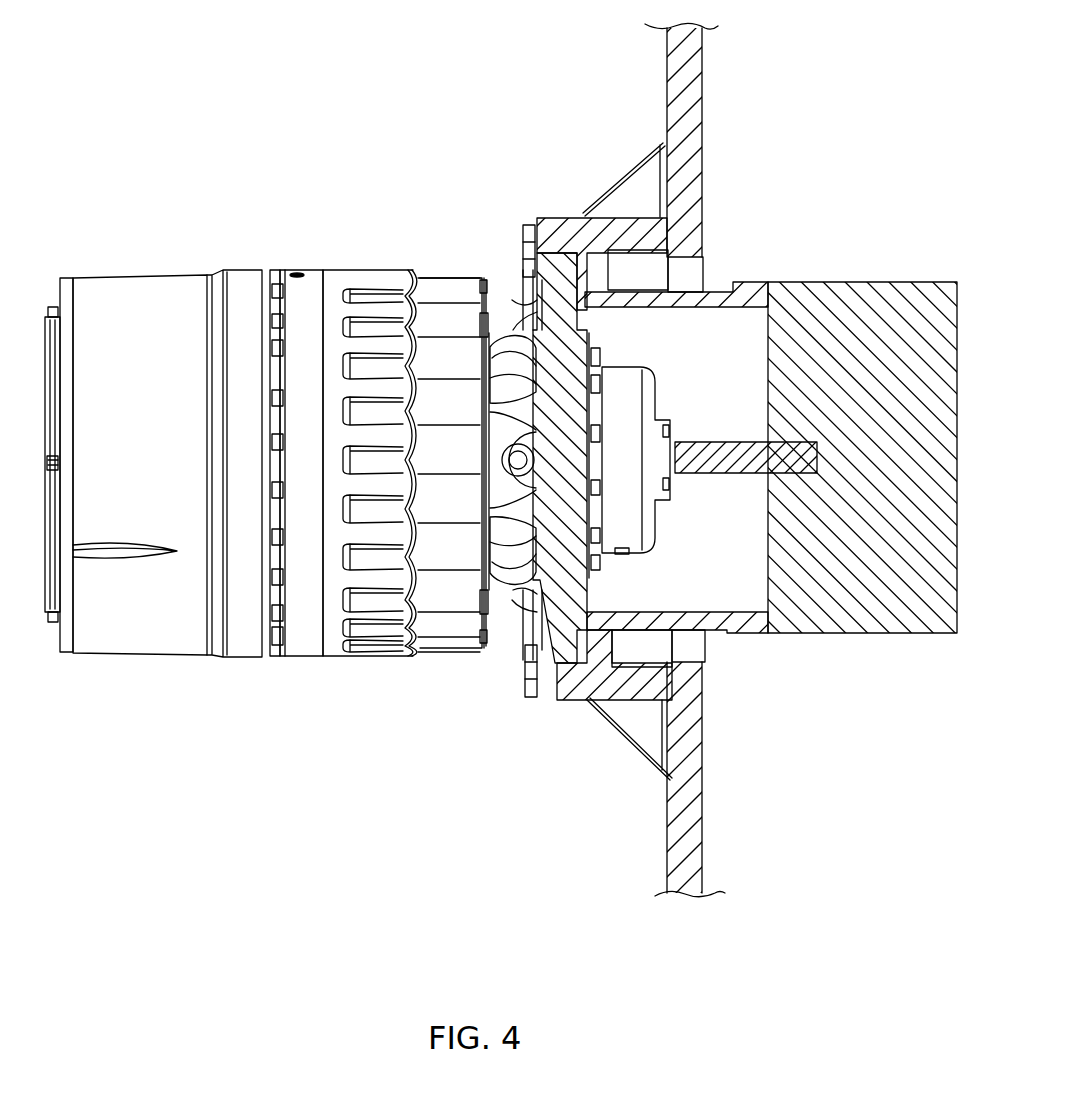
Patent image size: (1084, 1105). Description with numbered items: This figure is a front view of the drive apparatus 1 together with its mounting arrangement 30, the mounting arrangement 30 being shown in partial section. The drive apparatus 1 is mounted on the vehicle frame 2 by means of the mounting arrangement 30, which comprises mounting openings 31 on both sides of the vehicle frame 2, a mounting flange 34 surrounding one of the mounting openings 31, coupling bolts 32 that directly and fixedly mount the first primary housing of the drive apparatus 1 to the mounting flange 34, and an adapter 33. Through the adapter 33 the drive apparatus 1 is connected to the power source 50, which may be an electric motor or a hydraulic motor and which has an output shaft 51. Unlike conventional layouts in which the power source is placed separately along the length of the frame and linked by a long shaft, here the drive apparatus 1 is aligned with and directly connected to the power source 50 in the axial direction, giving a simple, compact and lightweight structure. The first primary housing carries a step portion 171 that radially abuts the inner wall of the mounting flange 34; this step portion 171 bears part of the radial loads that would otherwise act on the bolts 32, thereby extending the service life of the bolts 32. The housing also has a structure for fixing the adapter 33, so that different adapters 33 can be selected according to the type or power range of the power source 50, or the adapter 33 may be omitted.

The drive apparatus 1 is at (252, 240).
The vehicle frame 2 is at (660, 67).
The mounting arrangement 30 is at (766, 102).
The mounting opening 31 is at (643, 262).
The coupling bolt 32 is at (526, 222).
The adapter 33 is at (727, 288).
The mounting flange 34 is at (604, 685).
The power source 50 is at (903, 275).
The output shaft 51 is at (742, 438).
The step portion 171 is at (570, 258).